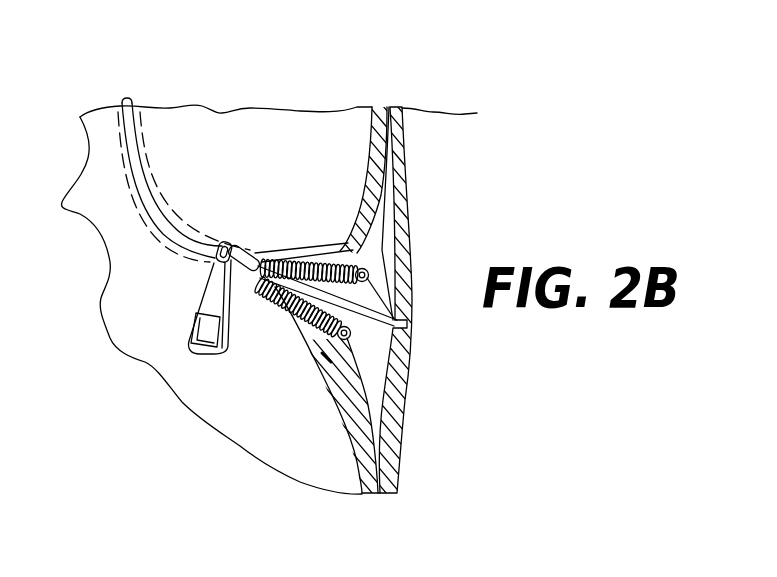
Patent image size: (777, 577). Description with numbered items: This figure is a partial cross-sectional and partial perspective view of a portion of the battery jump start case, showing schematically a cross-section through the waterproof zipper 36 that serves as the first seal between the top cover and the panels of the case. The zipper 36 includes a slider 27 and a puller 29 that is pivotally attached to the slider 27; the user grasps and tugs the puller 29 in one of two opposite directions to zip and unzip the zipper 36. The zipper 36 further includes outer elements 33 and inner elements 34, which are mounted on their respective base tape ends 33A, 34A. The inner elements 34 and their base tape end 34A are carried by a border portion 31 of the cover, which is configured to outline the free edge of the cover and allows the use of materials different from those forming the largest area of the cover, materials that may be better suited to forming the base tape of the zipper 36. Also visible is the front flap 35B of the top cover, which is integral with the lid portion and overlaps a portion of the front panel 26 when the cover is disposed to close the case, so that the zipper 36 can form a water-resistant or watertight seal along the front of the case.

The front panel 26 is at (392, 494).
The slider 27 is at (250, 250).
The puller 29 is at (203, 308).
The border portion 31 is at (222, 130).
The outer elements 33 is at (352, 342).
The base tape end 33A is at (352, 367).
The inner elements 34 is at (350, 250).
The base tape end 34A is at (355, 248).
The front flap 35B is at (463, 114).
The waterproof zipper 36 is at (122, 99).